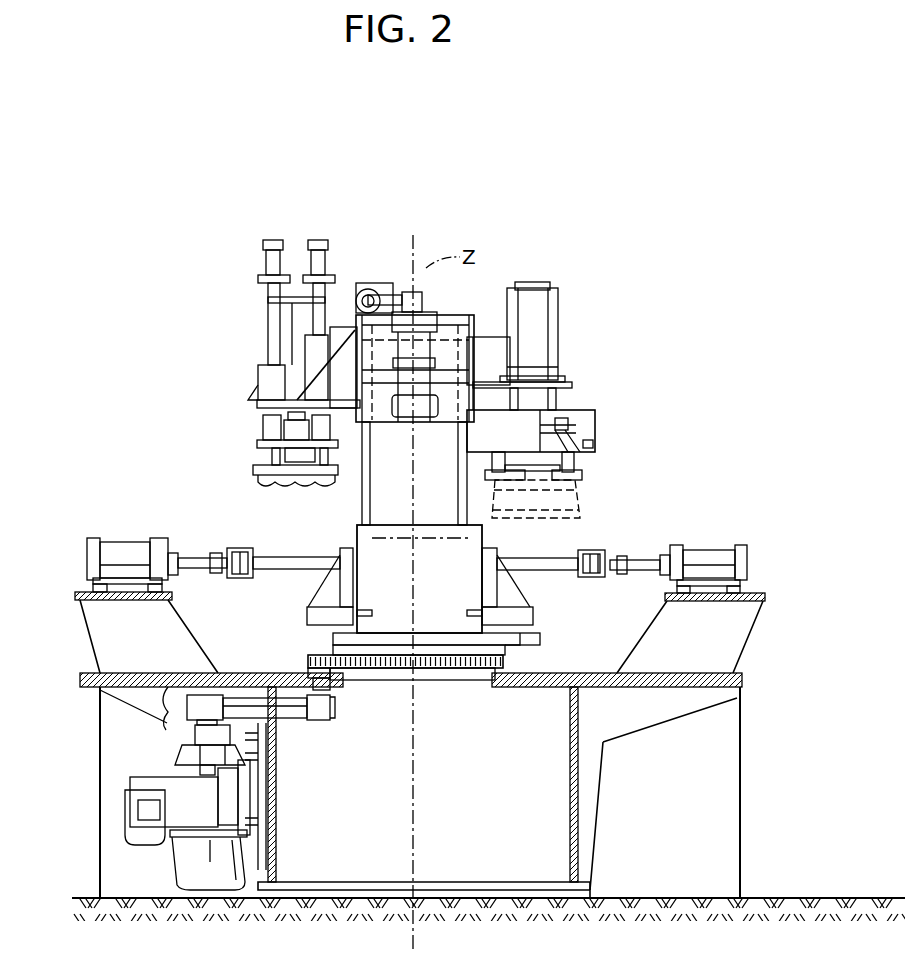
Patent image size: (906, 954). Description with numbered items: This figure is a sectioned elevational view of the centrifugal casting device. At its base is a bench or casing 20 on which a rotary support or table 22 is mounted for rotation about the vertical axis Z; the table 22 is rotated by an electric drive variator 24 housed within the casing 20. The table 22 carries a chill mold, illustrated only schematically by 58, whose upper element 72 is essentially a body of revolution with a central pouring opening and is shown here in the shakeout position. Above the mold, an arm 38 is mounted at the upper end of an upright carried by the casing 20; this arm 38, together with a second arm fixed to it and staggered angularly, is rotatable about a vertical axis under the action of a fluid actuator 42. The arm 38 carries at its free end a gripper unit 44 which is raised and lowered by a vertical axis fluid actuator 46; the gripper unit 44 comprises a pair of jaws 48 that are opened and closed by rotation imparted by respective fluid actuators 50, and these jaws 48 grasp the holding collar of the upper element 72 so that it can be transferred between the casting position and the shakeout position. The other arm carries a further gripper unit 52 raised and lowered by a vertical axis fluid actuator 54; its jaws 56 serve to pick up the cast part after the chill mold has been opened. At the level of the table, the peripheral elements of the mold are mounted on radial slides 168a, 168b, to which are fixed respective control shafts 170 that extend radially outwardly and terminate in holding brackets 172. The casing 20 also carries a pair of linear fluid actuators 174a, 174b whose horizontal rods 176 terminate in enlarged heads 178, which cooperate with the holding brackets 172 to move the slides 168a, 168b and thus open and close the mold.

The casing 20 is at (693, 860).
The rotary support 22 is at (465, 675).
The electric drive variator 24 is at (185, 872).
The arm 38 is at (357, 328).
The fluid actuator 42 is at (390, 288).
The gripper unit 44 is at (258, 443).
The vertical axis fluid actuator 46 is at (285, 313).
The jaws 48 is at (270, 456).
The fluid actuators 50 is at (315, 242).
The gripper unit 52 is at (578, 428).
The vertical axis fluid actuator 54 is at (537, 315).
The jaws 56 is at (492, 468).
The chill mold 58 is at (462, 547).
The upper element 72 is at (262, 480).
The radial slide 168a is at (327, 607).
The radial slide 168b is at (533, 593).
The control shafts 170 is at (308, 562).
The holding brackets 172 is at (237, 550).
The linear fluid actuator 174a is at (127, 546).
The linear fluid actuator 174b is at (712, 555).
The horizontal rods 176 is at (193, 563).
The enlarged heads 178 is at (250, 578).